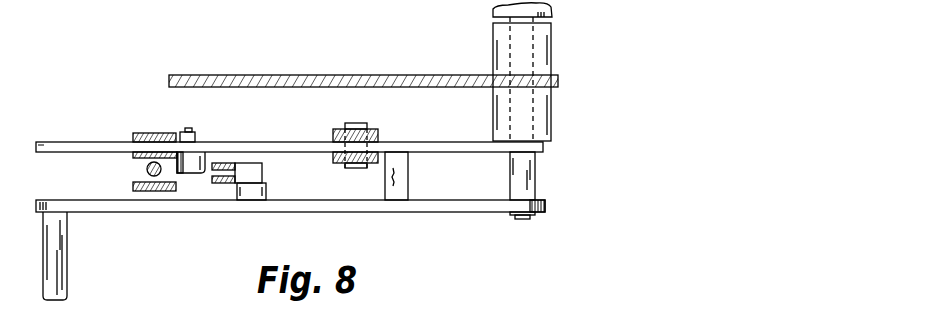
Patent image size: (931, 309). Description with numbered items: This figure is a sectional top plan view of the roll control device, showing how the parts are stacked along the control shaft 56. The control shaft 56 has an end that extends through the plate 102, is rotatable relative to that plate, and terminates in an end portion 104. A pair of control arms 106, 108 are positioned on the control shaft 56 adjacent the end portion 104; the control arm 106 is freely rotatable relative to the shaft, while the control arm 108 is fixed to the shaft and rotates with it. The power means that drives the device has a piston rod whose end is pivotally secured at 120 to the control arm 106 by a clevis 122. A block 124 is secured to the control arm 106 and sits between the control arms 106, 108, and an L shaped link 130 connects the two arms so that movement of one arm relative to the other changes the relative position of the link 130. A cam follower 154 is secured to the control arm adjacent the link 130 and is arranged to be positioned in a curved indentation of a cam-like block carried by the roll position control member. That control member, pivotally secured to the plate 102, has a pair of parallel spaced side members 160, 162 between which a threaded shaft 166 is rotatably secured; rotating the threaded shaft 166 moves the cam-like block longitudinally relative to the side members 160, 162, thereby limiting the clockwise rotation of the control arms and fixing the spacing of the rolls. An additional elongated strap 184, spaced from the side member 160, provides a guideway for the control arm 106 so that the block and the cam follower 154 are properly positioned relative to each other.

The control shaft 56 is at (493, 11).
The plate 102 is at (378, 57).
The end portion 104 is at (528, 219).
The control arm 106 is at (465, 140).
The control arm 108 is at (470, 212).
The pivotal connection 120 is at (356, 123).
The clevis 122 is at (333, 133).
The block 124 is at (409, 173).
The L shaped link 130 is at (262, 170).
The cam follower 154 is at (203, 160).
The side member 160 is at (133, 155).
The side member 162 is at (145, 192).
The threaded shaft 166 is at (146, 167).
The elongated strap 184 is at (152, 132).